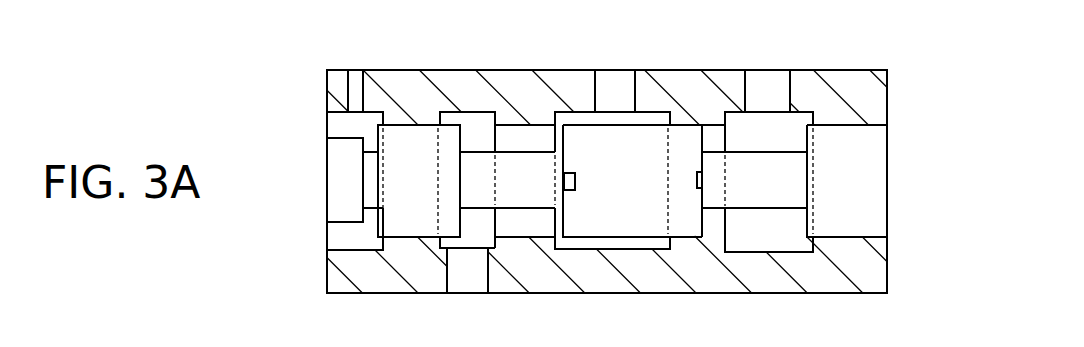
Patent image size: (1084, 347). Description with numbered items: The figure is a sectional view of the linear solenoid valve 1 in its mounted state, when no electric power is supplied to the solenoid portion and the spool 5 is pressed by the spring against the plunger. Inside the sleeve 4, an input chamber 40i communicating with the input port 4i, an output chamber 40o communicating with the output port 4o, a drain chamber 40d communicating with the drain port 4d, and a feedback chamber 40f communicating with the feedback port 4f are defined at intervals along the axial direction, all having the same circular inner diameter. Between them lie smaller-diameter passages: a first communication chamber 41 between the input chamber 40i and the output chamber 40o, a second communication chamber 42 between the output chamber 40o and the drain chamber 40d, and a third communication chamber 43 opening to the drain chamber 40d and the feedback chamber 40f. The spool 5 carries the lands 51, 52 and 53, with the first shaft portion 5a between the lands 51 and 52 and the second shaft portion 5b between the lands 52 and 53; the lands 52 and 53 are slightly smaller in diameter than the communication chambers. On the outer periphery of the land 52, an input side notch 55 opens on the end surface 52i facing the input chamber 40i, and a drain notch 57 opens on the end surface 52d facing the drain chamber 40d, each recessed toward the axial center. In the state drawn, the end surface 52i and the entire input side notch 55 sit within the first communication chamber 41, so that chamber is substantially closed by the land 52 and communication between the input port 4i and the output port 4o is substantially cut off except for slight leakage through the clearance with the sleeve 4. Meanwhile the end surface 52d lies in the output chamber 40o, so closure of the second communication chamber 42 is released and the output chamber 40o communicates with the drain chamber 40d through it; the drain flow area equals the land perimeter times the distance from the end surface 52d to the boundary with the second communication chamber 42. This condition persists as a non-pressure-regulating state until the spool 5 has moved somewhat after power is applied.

The linear solenoid valve 1 is at (890, 85).
The sleeve 4 is at (327, 252).
The drain port 4d is at (467, 272).
The feedback port 4f is at (356, 82).
The input port 4i is at (767, 78).
The output port 4o is at (610, 78).
The spool 5 is at (326, 165).
The first shaft portion 5a is at (788, 163).
The second shaft portion 5b is at (518, 200).
The drain chamber 40d is at (480, 122).
The feedback chamber 40f is at (353, 236).
The input chamber 40i is at (787, 130).
The output chamber 40o is at (636, 122).
The first communication chamber 41 is at (712, 228).
The second communication chamber 42 is at (533, 140).
The third communication chamber 43 is at (398, 173).
The land 51 is at (875, 142).
The land 52 is at (585, 137).
The end surface of the land 52 on the drain chamber side 52d is at (556, 156).
The end surface of the land 52 on the input chamber side 52i is at (702, 197).
The land 53 is at (407, 225).
The input side notch 55 is at (702, 181).
The drain notch 57 is at (573, 191).